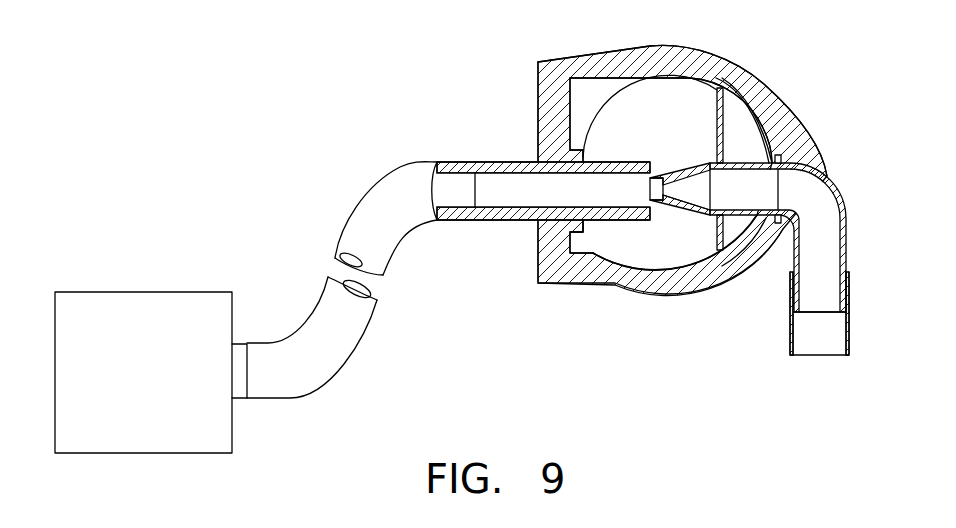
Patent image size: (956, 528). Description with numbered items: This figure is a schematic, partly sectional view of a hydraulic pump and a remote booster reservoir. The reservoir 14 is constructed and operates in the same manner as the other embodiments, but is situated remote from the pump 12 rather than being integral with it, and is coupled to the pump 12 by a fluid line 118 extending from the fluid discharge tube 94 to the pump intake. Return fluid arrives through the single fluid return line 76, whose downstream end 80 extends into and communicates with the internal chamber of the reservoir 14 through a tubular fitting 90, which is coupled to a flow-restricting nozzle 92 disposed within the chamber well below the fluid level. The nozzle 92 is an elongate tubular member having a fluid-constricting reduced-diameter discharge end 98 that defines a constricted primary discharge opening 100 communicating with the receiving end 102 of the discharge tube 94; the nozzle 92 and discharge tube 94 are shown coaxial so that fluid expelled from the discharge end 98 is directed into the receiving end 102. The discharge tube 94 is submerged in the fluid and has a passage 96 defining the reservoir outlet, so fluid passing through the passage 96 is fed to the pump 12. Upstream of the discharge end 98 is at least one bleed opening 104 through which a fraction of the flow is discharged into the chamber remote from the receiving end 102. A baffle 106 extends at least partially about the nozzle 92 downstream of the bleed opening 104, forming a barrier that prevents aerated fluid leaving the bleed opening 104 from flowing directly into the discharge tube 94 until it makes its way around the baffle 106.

The pump 12 is at (155, 292).
The reservoir 14 is at (627, 50).
The single fluid return line 76 is at (788, 343).
The downstream end 80 is at (848, 288).
The tubular fitting 90 is at (840, 190).
The flow-restricting nozzle 92 is at (736, 217).
The fluid discharge tube 94 is at (585, 233).
The passage 96 is at (538, 208).
The discharge end 98 is at (707, 212).
The primary discharge opening 100 is at (680, 200).
The receiving end 102 is at (656, 177).
The bleed opening 104 is at (744, 165).
The baffle 106 is at (723, 117).
The fluid line 118 is at (382, 178).